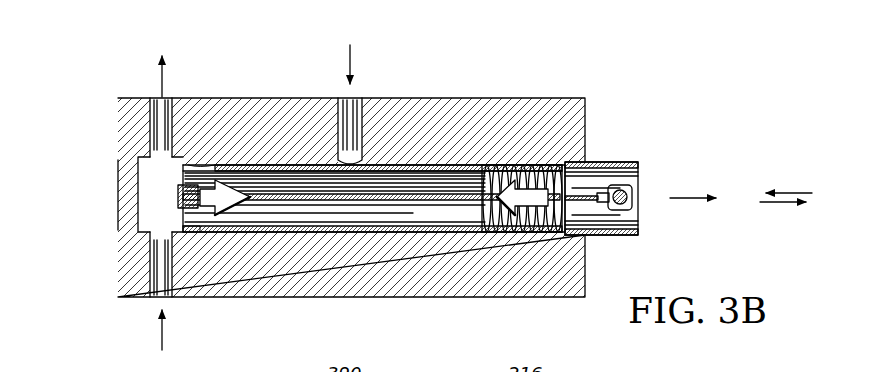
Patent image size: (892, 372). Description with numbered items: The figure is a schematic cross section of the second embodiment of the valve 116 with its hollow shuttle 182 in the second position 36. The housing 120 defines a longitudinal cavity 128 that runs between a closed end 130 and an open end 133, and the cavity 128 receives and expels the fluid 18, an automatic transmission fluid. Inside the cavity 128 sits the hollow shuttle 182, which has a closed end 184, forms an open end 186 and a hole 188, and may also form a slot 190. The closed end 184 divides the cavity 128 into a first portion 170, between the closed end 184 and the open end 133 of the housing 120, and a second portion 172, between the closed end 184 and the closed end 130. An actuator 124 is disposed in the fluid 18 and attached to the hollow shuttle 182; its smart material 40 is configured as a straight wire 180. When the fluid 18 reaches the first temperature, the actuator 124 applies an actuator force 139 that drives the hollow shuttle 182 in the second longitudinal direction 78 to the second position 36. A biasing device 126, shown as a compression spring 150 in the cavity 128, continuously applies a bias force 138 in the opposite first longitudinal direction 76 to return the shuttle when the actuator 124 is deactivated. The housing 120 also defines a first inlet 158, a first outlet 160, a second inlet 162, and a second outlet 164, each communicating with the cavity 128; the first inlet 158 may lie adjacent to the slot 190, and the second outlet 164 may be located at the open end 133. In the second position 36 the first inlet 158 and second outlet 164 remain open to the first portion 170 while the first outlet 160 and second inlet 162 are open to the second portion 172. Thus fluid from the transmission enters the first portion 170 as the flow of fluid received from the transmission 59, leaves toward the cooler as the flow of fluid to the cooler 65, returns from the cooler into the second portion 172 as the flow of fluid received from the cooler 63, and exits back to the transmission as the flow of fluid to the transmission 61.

The housing 120 is at (566, 118).
The first outlet 160 is at (167, 118).
The second inlet 162 is at (168, 272).
The second portion of the cavity 172 is at (155, 203).
The closed end of the housing cavity 130 is at (130, 207).
The hole 188 is at (205, 168).
The closed end of the hollow shuttle 184 is at (150, 238).
The first portion of the cavity 170 is at (195, 216).
The slot 190 is at (396, 172).
The hollow shuttle 182 is at (287, 170).
The straight wire 180 is at (353, 199).
The fluid 18 is at (467, 182).
The actuator 124 is at (268, 197).
The smart material 40 is at (400, 199).
The actuator force 139 is at (232, 193).
The first inlet 158 is at (355, 130).
The open end of the hollow shuttle 186 is at (475, 210).
The bias force 138 is at (503, 177).
The cavity 128 is at (537, 163).
The biasing device 126 is at (535, 233).
The compression spring 150 is at (548, 180).
The second outlet 164 is at (640, 178).
The open end of the housing cavity 133 is at (587, 210).
The flow of fluid to the transmission 61 is at (162, 76).
The flow of fluid received from the cooler 63 is at (162, 331).
The flow of fluid received from the transmission 59 is at (350, 70).
The flow of fluid to the cooler 65 is at (688, 200).
The first longitudinal direction 76 is at (785, 192).
The second longitudinal direction 78 is at (785, 203).
The valve 116 is at (453, 69).
The second position 36 is at (462, 79).